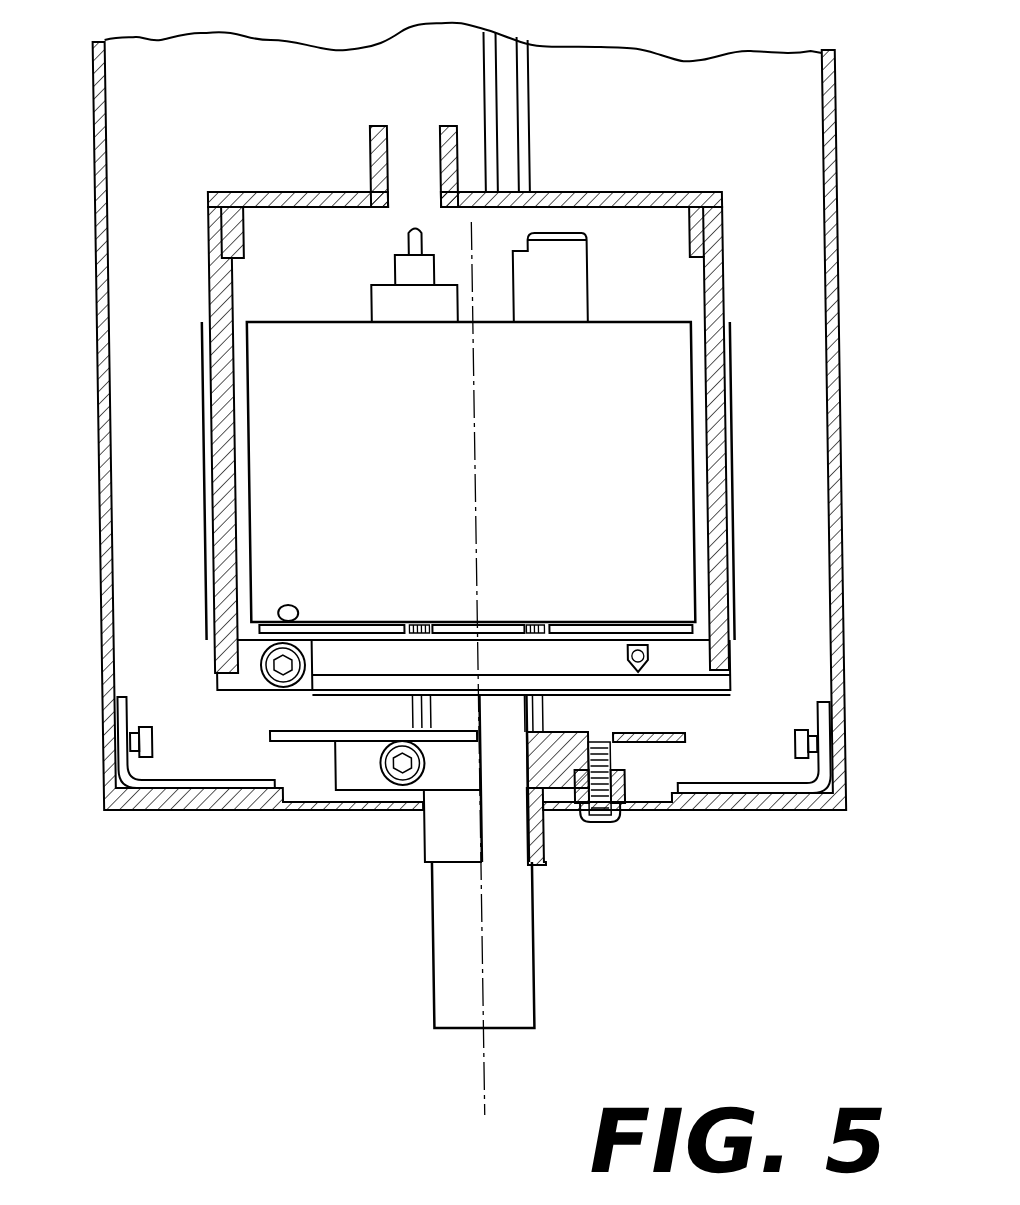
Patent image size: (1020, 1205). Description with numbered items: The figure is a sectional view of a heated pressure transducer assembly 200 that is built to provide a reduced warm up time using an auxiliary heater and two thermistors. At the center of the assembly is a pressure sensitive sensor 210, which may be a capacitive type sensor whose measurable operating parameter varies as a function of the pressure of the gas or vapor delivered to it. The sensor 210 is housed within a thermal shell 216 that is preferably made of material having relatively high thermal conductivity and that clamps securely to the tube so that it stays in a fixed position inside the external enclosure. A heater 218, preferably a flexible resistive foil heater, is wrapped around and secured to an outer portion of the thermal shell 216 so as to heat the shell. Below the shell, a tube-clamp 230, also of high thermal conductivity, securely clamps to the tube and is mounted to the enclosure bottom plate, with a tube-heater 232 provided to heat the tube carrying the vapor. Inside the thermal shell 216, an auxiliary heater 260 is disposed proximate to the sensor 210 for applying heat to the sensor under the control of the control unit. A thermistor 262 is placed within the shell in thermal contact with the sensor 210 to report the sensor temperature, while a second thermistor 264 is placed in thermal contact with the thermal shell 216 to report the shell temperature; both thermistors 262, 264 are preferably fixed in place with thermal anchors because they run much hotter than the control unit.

The transducer assembly 200 is at (145, 840).
The pressure sensitive sensor 210 is at (600, 447).
The thermal shell 216 is at (203, 250).
The heater 218 is at (197, 392).
The tube-clamp 230 is at (324, 762).
The tube-heater 232 is at (642, 730).
The auxiliary heater 260 is at (338, 622).
The thermistor 262 is at (284, 606).
The thermistor 264 is at (636, 642).